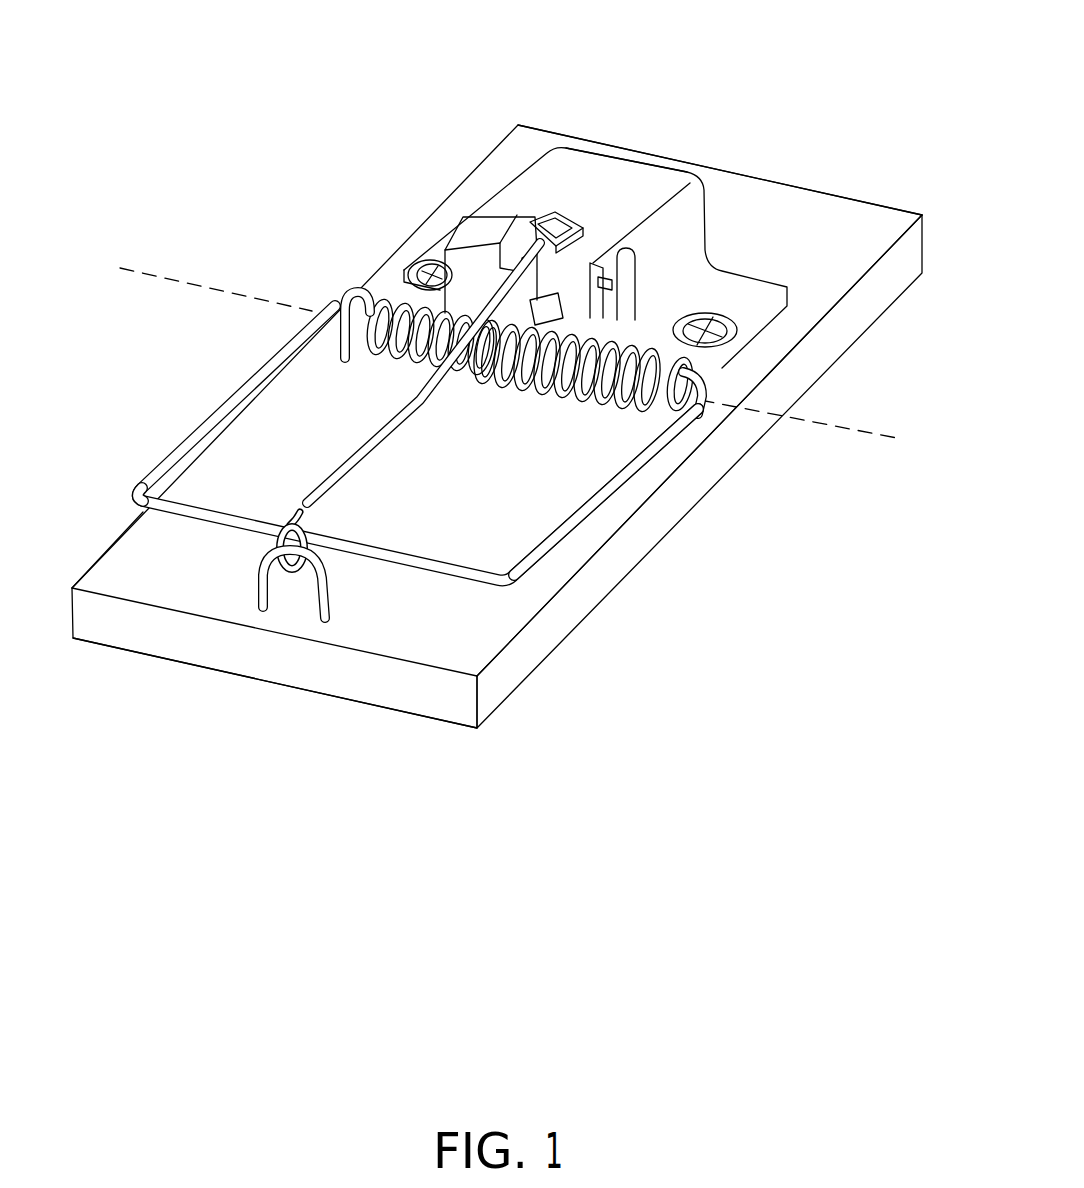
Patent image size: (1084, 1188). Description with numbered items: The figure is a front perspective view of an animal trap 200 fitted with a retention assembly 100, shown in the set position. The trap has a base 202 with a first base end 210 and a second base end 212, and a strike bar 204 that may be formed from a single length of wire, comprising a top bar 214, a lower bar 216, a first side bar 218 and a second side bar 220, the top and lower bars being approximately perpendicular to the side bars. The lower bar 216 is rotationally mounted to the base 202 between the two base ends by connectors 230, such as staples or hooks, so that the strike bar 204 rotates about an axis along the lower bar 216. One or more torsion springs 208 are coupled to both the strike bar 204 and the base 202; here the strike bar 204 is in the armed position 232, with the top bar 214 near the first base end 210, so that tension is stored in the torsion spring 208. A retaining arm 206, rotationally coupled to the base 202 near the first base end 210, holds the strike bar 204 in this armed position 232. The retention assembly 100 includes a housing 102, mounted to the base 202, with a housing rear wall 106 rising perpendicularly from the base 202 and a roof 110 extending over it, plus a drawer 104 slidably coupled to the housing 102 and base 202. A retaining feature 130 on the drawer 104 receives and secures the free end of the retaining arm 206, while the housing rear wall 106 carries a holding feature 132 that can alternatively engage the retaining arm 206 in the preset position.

The retention assembly 100 is at (640, 135).
The housing 102 is at (547, 170).
The drawer 104 is at (530, 250).
The housing rear wall 106 is at (686, 178).
The roof 110 is at (584, 170).
The retaining feature 130 is at (543, 247).
The holding feature 132 is at (598, 292).
The animal trap 200 is at (695, 543).
The base 202 is at (880, 228).
The strike bar 204 is at (393, 567).
The retaining arm 206 is at (353, 480).
The torsion spring 208 is at (392, 305).
The first base end 210 is at (260, 630).
The second base end 212 is at (825, 190).
The top bar 214 is at (205, 513).
The lower bar 216 is at (695, 392).
The first side bar 218 is at (145, 476).
The second side bar 220 is at (550, 540).
The connectors 230 is at (347, 298).
The armed position 232 is at (197, 369).